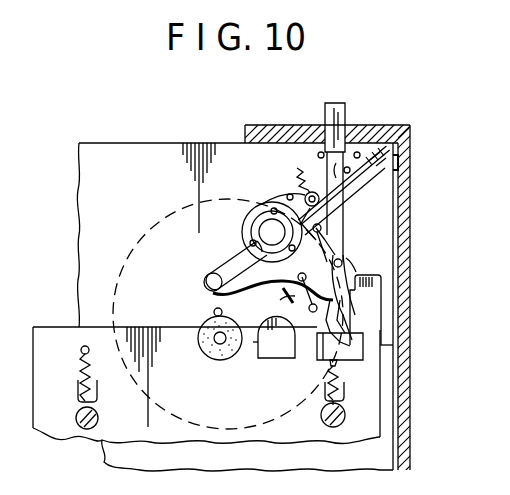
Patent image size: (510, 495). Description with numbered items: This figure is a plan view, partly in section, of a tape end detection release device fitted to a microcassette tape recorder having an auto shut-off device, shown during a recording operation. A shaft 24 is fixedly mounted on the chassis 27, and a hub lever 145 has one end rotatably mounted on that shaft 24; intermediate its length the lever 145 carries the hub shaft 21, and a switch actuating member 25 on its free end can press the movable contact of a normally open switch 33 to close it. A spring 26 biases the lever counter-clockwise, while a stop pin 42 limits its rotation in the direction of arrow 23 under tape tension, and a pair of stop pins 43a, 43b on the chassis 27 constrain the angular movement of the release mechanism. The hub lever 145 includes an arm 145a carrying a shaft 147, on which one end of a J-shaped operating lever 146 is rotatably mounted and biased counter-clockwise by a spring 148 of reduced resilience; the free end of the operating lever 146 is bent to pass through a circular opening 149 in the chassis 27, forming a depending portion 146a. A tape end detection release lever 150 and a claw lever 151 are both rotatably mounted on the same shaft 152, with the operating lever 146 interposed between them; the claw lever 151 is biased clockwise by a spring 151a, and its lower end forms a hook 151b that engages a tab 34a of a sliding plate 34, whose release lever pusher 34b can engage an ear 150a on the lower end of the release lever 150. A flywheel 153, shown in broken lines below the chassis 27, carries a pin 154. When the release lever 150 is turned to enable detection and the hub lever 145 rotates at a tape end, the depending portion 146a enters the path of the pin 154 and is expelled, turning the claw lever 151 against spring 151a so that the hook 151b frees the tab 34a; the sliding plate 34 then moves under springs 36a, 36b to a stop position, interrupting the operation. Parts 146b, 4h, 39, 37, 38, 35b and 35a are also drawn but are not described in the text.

The chassis 27 is at (78, 234).
The flywheel 153 is at (136, 240).
The stop pin 43a is at (320, 152).
The stop pin 43b is at (358, 152).
The normally open switch 33 is at (405, 176).
The tape end detection release lever 150 is at (332, 103).
The operating lever 146 is at (340, 214).
The lever end 146b is at (350, 122).
The spring 26 is at (297, 167).
The switch actuating member 25 is at (312, 191).
The pin 4h is at (290, 194).
The stop pin 42 is at (266, 202).
The hub shaft 21 is at (258, 214).
The hub lever 145 is at (226, 256).
The arm 145a is at (248, 238).
The shaft 24 is at (204, 278).
The spring 148 is at (228, 284).
The arrow 23 is at (281, 290).
The shaft 147 is at (309, 310).
The pin 39 is at (214, 312).
The roller 37 is at (205, 350).
The stop 38 is at (258, 345).
The pin 154 is at (277, 338).
The depending portion 146a is at (300, 340).
The tab 34a is at (313, 340).
The sliding plate 34 is at (232, 437).
The spring 36b is at (80, 372).
The roller 35b is at (80, 413).
The hook 151b is at (357, 380).
The spring 36a is at (327, 392).
The roller 35a is at (334, 428).
The shaft 152 is at (345, 241).
The release lever pusher 34b is at (381, 273).
The spring 151a is at (356, 262).
The ear 150a is at (342, 296).
The claw lever 151 is at (364, 312).
The circular opening 149 is at (393, 346).